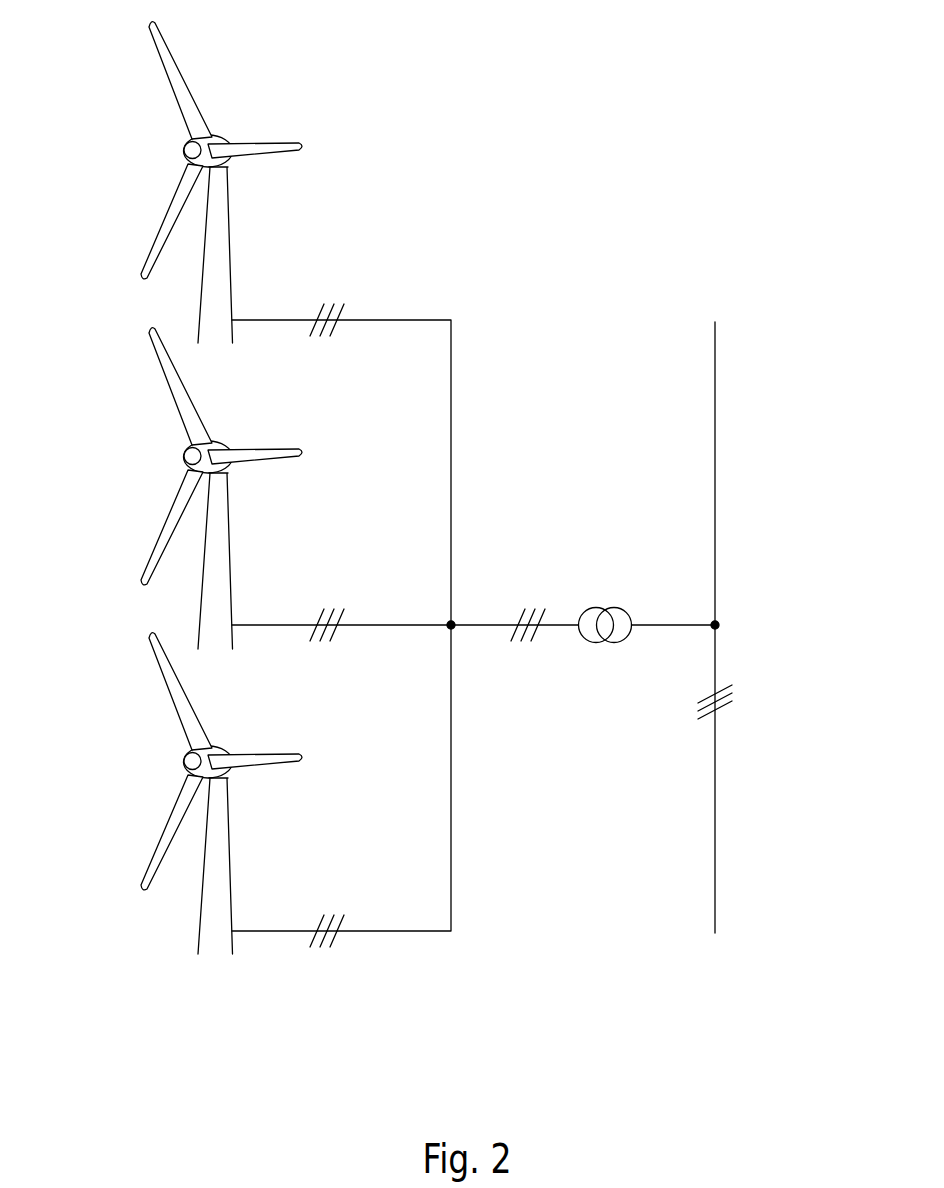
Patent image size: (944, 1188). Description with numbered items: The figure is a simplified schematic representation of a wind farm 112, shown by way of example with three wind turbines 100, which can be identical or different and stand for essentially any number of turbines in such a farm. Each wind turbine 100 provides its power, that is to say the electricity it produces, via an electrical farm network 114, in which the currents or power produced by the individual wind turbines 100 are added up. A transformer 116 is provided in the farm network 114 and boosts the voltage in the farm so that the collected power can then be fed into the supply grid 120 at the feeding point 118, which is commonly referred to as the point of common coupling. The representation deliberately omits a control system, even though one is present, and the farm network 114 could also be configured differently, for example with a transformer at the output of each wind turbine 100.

The wind turbine 100 is at (218, 241).
The wind farm 112 is at (528, 147).
The electrical farm network 114 is at (472, 625).
The transformer 116 is at (606, 598).
The feeding point 118 is at (729, 602).
The supply grid 120 is at (717, 357).